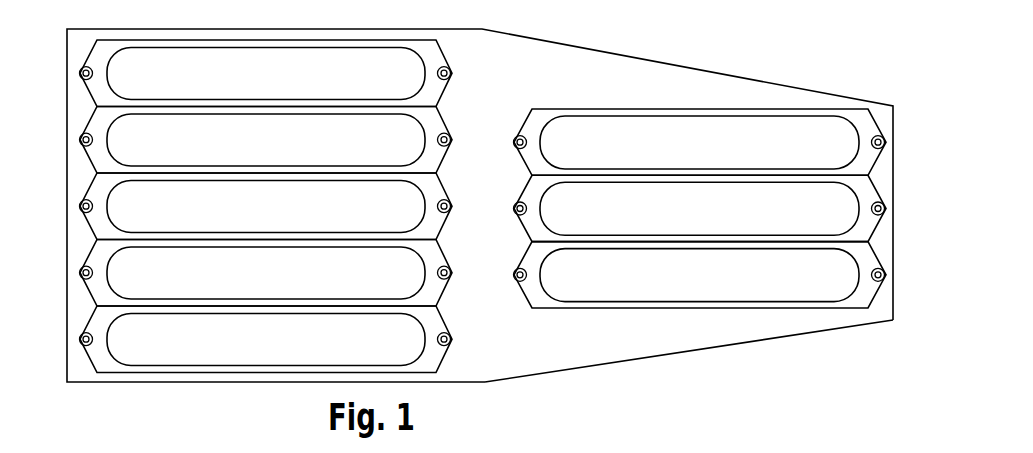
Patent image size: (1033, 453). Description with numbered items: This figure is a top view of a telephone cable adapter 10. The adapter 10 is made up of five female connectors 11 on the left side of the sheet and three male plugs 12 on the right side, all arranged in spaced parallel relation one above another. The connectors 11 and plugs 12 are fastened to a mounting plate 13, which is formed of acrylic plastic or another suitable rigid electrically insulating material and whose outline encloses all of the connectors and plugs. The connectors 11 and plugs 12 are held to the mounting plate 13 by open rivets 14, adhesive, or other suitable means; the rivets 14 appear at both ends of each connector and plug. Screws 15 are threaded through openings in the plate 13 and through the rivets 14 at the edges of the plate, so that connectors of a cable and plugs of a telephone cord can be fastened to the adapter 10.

The telephone cable adapter 10 is at (578, 49).
The female connector 11 is at (367, 52).
The male plug 12 is at (620, 120).
The mounting plate 13 is at (721, 336).
The open rivet 14 is at (81, 69).
The screw 15 is at (86, 77).